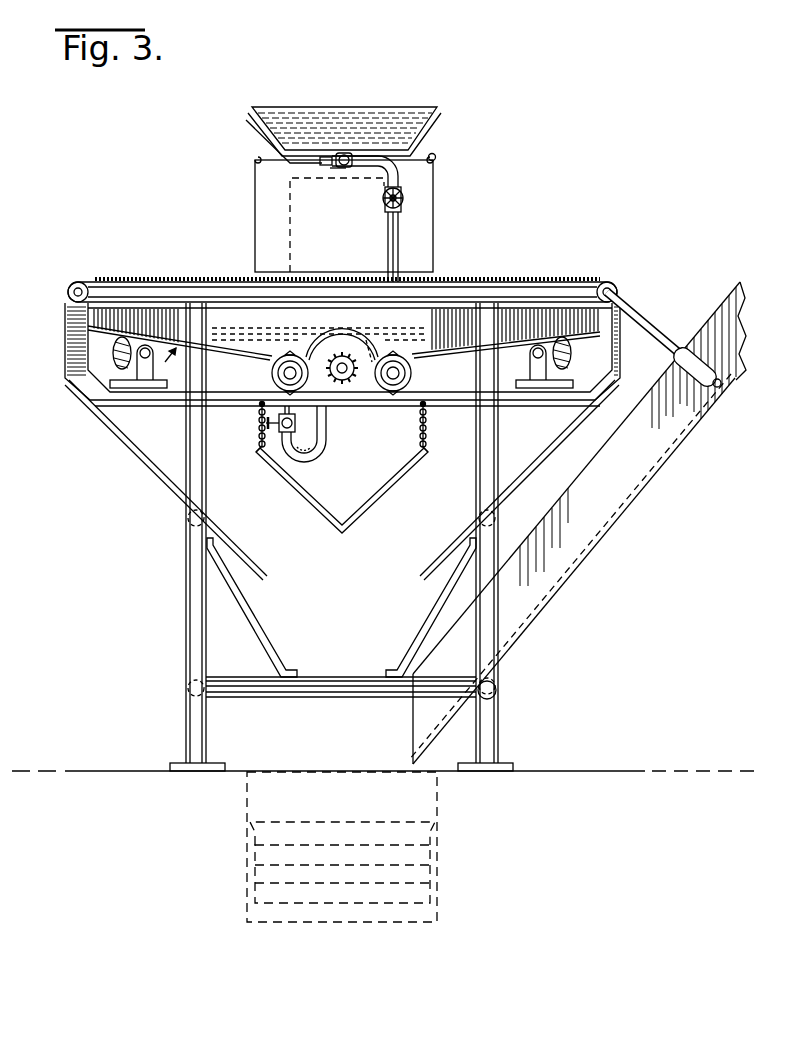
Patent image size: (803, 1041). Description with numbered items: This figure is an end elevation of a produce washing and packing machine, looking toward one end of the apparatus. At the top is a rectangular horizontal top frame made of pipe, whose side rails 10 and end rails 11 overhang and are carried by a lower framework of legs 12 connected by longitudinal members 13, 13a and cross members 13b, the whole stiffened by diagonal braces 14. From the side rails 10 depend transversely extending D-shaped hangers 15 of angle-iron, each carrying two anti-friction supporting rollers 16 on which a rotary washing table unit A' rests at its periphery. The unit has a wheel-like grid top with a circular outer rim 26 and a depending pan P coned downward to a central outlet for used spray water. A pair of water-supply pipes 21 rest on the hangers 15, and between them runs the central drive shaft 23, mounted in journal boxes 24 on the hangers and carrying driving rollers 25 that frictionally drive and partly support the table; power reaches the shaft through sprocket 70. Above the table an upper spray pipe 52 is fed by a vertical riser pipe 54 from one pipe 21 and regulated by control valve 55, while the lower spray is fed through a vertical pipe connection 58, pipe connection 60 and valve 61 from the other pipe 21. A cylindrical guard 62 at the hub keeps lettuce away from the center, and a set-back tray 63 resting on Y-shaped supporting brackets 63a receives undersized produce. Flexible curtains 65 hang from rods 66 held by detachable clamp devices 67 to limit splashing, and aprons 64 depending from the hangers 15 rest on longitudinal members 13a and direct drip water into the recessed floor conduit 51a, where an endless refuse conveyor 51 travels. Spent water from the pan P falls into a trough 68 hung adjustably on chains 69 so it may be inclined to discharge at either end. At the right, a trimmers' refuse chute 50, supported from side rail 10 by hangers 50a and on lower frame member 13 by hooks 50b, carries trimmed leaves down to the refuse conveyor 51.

The side rails 10 is at (74, 284).
The end rails 11 is at (140, 282).
The rotary washing table unit A' is at (347, 256).
The outer rim 26 is at (100, 312).
The anti-friction supporting rollers 16 is at (118, 350).
The pan or hopper P is at (165, 366).
The D-shaped hangers 15 is at (148, 403).
The aprons or shields 64 is at (170, 482).
The longitudinal members 13a is at (188, 528).
The legs 12 is at (190, 628).
The longitudinal members 13 is at (190, 690).
The cross members 13b is at (318, 682).
The diagonal braces 14 is at (278, 602).
The set-back tray 63 is at (305, 118).
The Y-shaped supporting brackets 63a is at (272, 143).
The detachable clamp devices 67 is at (335, 153).
The rods 66 is at (436, 155).
The cylindrical guard 62 is at (298, 213).
The vertical flexible curtains 65 is at (420, 232).
The upper spray pipe 52 is at (343, 170).
The control valve 55 is at (384, 203).
The vertical riser pipe 54 is at (388, 238).
The sprocket 70 is at (302, 353).
The driving rollers 25 is at (318, 355).
The drive shaft 23 is at (342, 360).
The journal boxes 24 is at (370, 345).
The water-supply pipes 21 is at (289, 373).
The vertical pipe connection 58 is at (330, 418).
The pipe connection 60 is at (300, 455).
The valve 61 is at (282, 434).
The chains 69 is at (259, 436).
The trough 68 is at (366, 500).
The refuse chutes 50 is at (597, 507).
The hangers 50a is at (648, 303).
The hooks 50b is at (498, 690).
The refuse conveyor 51 is at (300, 912).
The floor conduit 51a is at (437, 815).